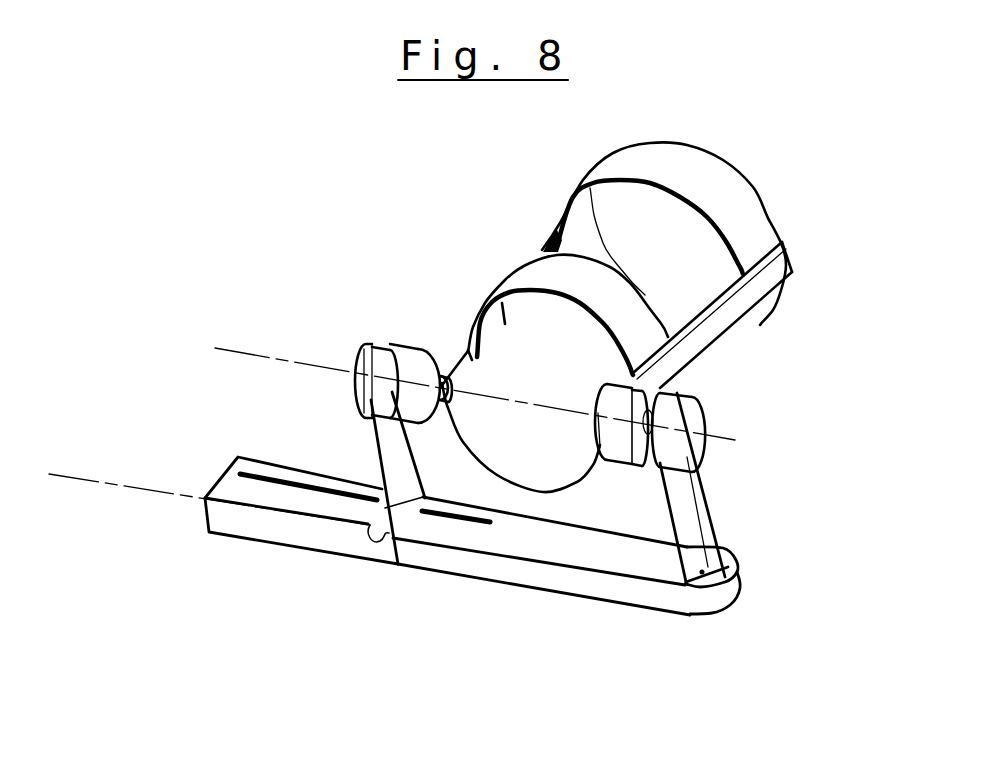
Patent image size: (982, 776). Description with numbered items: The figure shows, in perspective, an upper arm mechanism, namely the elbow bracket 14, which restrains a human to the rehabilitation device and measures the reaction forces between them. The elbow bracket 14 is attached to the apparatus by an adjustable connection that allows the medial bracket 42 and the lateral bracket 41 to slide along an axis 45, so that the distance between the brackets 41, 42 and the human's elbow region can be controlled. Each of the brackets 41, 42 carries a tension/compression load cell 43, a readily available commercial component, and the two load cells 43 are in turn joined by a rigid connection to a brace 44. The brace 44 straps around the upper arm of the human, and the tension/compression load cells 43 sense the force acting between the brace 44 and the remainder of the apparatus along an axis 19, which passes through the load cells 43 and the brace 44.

The elbow bracket 14 is at (398, 236).
The axis 19 is at (265, 356).
The lateral bracket 41 is at (302, 533).
The medial bracket 42 is at (640, 557).
The tension/compression load cell 43 is at (398, 400).
The brace 44 is at (627, 315).
The axis 45 is at (88, 478).